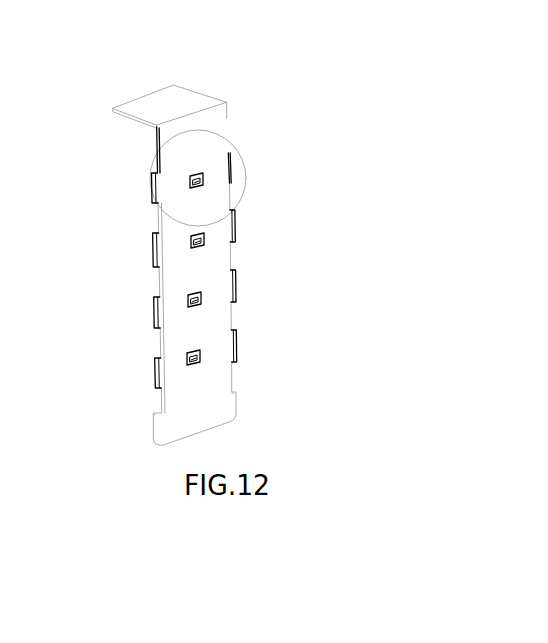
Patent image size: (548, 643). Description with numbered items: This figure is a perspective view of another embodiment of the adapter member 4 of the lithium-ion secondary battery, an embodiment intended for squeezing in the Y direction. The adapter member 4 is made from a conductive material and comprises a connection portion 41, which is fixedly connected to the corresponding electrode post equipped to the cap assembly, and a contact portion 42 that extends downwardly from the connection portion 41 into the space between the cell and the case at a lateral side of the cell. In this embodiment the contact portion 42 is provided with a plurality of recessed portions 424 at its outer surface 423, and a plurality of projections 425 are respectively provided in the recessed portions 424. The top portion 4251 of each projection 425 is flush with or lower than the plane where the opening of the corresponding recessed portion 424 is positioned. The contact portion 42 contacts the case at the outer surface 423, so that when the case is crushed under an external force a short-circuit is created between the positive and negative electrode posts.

The adapter member 4 is at (290, 105).
The connection portion 41 is at (168, 107).
The contact portion 42 is at (142, 335).
The outer surface 423 is at (213, 272).
The recessed portion 424 is at (203, 180).
The projection 425 is at (190, 181).
The top portion 4251 is at (200, 180).